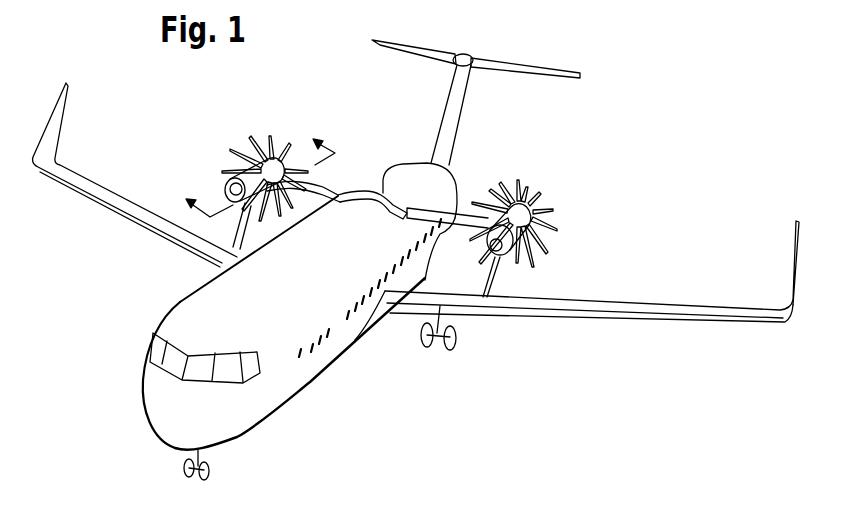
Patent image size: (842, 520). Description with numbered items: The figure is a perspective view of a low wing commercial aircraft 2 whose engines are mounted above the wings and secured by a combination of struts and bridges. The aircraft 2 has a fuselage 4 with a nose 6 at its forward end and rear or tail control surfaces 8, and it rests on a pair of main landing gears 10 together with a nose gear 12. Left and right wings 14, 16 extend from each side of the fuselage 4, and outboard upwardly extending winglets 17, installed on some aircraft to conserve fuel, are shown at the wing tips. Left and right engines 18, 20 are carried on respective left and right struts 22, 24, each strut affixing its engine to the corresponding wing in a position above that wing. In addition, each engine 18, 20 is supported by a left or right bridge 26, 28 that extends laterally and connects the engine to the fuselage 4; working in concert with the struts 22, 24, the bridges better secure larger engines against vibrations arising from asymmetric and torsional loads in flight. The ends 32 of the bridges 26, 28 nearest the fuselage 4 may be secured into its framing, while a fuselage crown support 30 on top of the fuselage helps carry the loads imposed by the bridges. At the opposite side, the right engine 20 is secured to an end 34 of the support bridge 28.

The commercial aircraft 2 is at (672, 183).
The fuselage 4 is at (186, 313).
The nose 6 is at (157, 424).
The rear or tail control surfaces 8 is at (517, 63).
The main landing gears 10 is at (445, 354).
The nose gear 12 is at (213, 479).
The left wing 14 is at (642, 304).
The right wing 16 is at (93, 180).
The winglets 17 is at (790, 253).
The left engine 18 is at (533, 195).
The right engine 20 is at (250, 142).
The left strut 22 is at (503, 287).
The right strut 24 is at (241, 231).
The left bridge 26 is at (443, 202).
The right bridge 28 is at (325, 190).
The fuselage crown support 30 is at (383, 187).
The ends of bridges 32 is at (340, 196).
The end of support bridge 34 is at (472, 231).